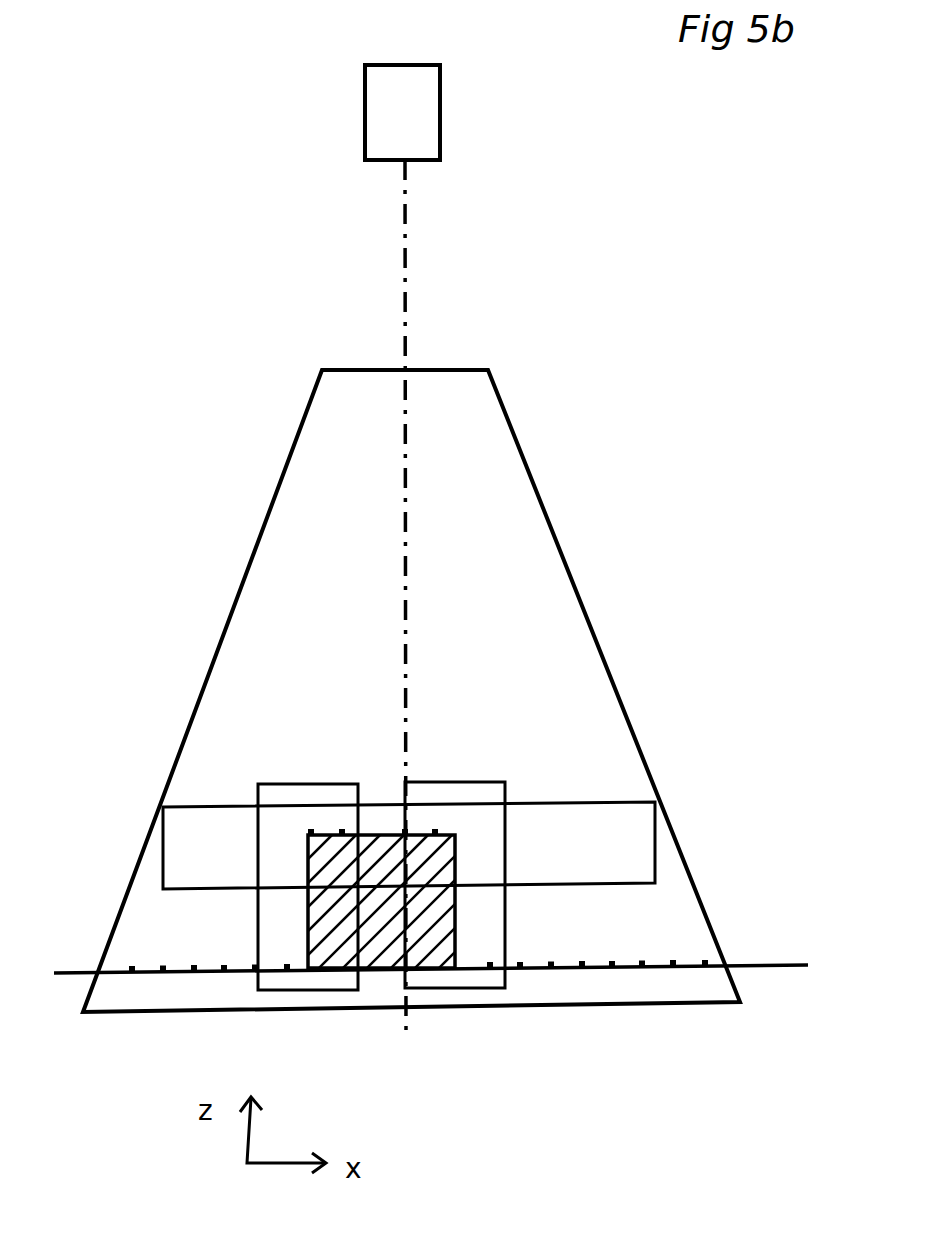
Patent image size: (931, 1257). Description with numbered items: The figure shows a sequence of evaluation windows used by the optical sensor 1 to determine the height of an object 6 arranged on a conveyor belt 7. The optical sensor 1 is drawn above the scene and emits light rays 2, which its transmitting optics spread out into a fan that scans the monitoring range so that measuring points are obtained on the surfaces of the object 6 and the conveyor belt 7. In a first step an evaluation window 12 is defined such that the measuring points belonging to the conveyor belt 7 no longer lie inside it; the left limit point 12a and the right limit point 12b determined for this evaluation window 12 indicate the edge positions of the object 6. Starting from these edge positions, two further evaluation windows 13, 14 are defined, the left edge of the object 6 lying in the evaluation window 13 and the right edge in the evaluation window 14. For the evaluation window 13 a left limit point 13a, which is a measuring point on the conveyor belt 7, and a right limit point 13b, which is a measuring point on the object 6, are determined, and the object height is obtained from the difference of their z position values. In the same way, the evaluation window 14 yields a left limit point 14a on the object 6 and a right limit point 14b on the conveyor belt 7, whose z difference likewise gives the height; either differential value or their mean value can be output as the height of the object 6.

The optical sensor 1 is at (423, 122).
The light rays 2 is at (551, 522).
The object 6 is at (452, 938).
The conveyor belt 7 is at (762, 962).
The evaluation window 12 is at (552, 802).
The left limit point 12a is at (308, 834).
The right limit point 12b is at (433, 833).
The evaluation window 13 is at (305, 782).
The left limit point 13a is at (282, 966).
The right limit point 13b is at (343, 832).
The evaluation window 14 is at (452, 782).
The left limit point 14a is at (410, 832).
The right limit point 14b is at (492, 962).